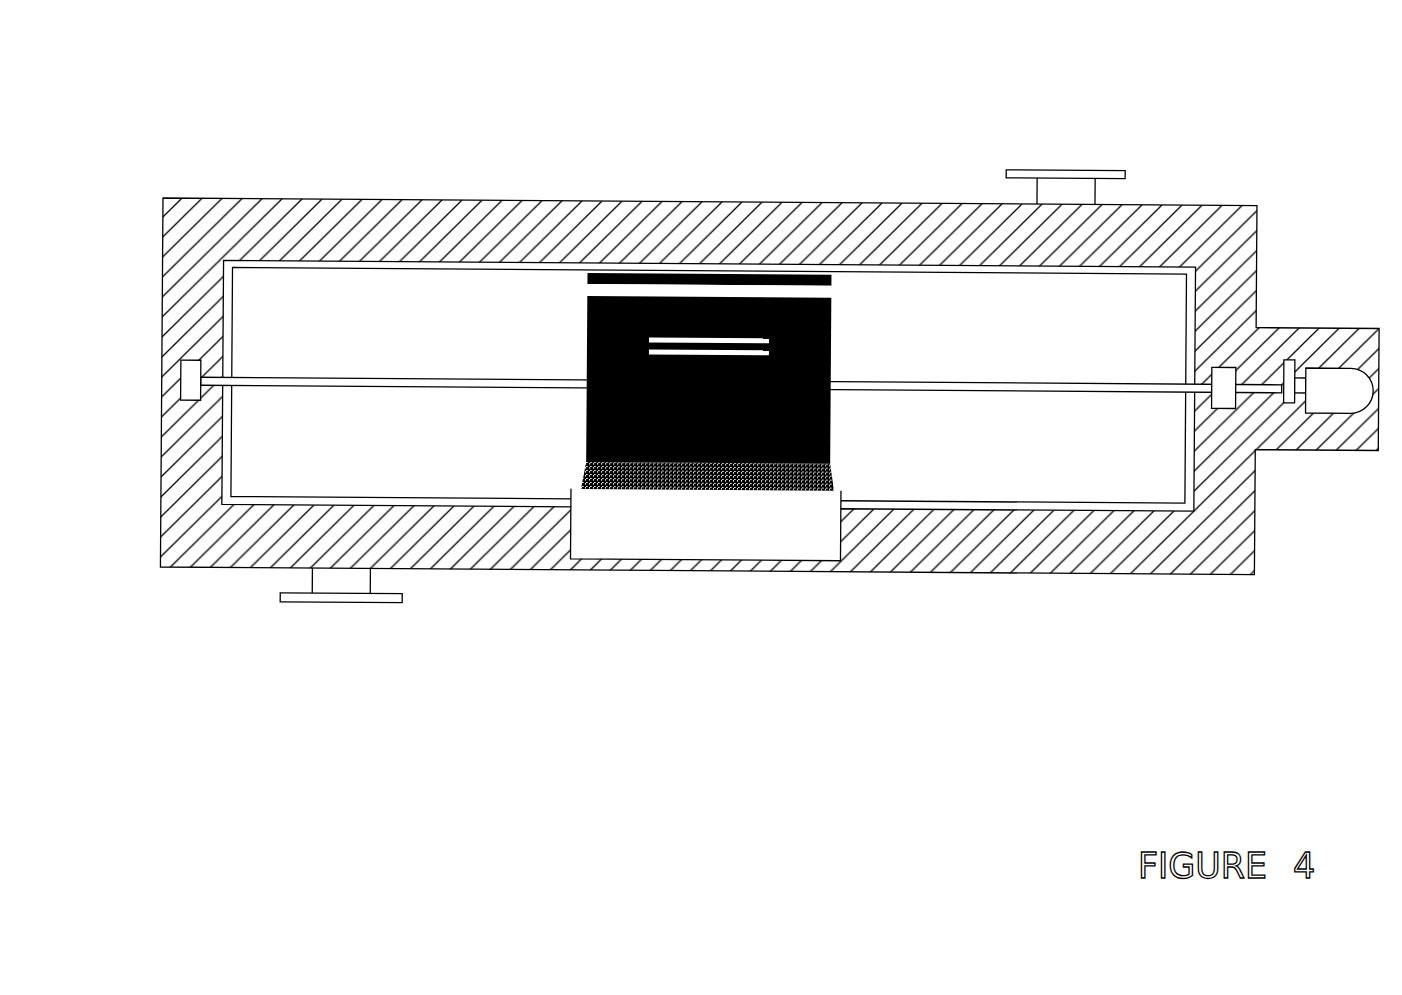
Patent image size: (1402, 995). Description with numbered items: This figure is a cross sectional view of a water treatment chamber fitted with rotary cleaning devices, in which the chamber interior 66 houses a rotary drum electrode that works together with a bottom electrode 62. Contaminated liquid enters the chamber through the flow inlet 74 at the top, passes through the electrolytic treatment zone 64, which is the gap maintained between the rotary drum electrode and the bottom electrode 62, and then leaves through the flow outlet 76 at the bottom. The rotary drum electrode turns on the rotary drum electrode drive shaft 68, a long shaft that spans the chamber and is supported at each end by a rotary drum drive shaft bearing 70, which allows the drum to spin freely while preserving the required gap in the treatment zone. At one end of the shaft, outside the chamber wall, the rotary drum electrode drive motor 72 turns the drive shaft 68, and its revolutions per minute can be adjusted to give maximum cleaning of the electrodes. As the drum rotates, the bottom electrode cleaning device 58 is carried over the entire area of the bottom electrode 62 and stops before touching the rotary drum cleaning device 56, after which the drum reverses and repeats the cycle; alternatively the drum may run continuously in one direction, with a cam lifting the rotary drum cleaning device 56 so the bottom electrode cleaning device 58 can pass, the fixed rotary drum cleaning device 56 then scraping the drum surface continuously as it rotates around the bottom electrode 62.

The rotary drum cleaning device 56 is at (733, 488).
The bottom electrode cleaning device 58 is at (645, 300).
The bottom electrode 62 is at (712, 277).
The electrolytic treatment zone 64 is at (787, 288).
The chamber interior 66 is at (1000, 474).
The rotary drum electrode drive shaft 68 is at (405, 378).
The rotary drum drive shaft bearing 70 is at (1323, 605).
The rotary drum electrode drive motor 72 is at (1327, 388).
The flow inlet 74 is at (1067, 167).
The flow outlet 76 is at (350, 607).